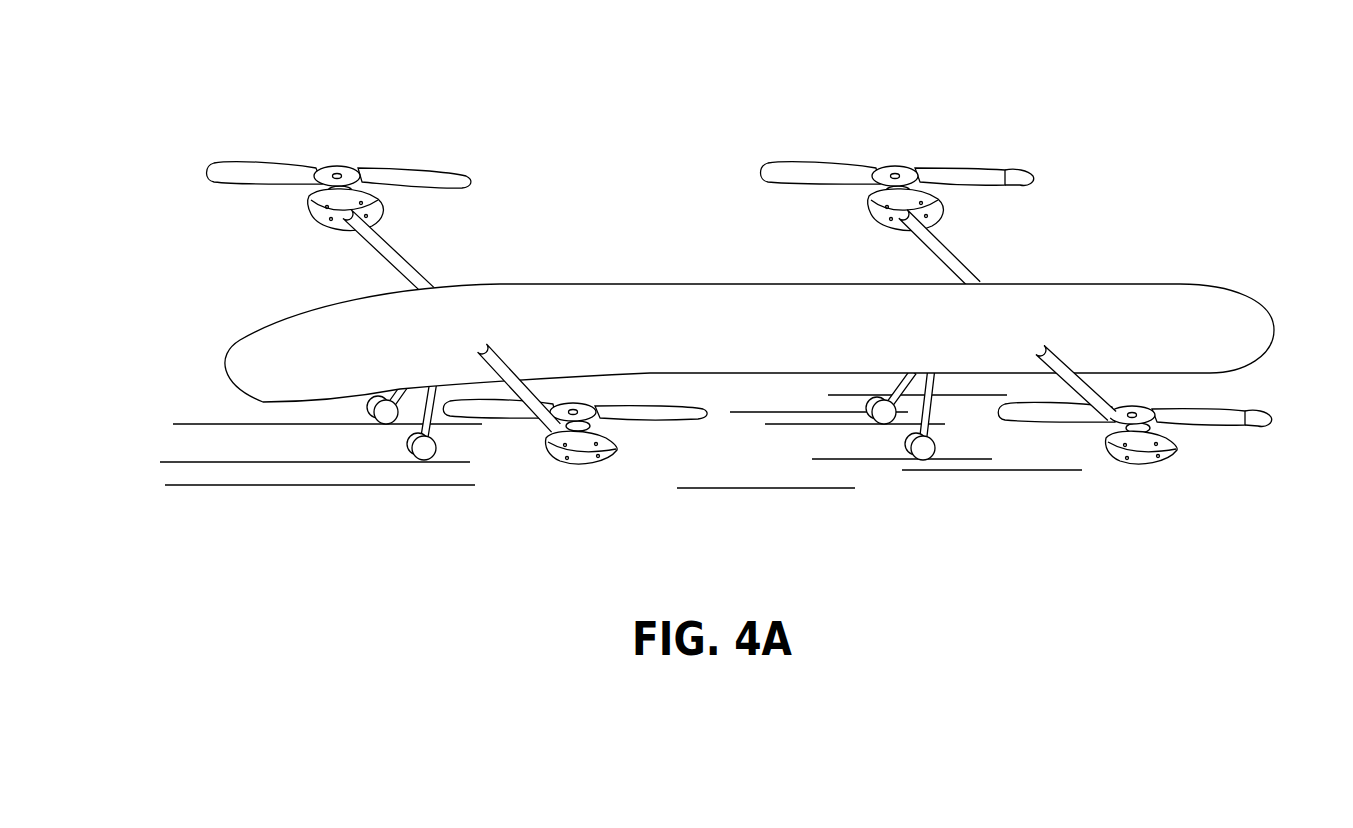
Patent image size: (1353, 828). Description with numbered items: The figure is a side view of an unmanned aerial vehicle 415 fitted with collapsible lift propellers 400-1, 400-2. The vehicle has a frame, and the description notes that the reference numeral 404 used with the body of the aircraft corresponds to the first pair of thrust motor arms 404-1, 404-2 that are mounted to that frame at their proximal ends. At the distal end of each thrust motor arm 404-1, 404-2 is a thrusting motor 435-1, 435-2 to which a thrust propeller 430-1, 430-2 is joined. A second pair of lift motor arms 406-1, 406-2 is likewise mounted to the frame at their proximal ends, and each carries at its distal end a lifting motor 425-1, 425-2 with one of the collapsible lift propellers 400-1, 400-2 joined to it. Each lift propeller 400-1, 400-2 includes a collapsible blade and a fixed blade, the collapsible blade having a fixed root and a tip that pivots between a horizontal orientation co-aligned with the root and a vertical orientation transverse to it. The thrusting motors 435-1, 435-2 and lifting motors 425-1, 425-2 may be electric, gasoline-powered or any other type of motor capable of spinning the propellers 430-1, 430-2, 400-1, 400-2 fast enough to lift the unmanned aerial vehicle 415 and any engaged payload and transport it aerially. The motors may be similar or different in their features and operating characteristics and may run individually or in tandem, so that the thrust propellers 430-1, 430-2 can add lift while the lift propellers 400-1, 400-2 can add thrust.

The lift propeller 400-1 is at (945, 152).
The lift propeller 400-2 is at (1112, 474).
The thrust propeller 430-1 is at (388, 152).
The thrust propeller 430-2 is at (552, 488).
The aircraft body 404 is at (242, 367).
The unmanned aerial vehicle 415 is at (1228, 319).
The thrust motor arm 404-1 is at (397, 265).
The thrust motor arm 404-2 is at (497, 366).
The lift motor arm 406-1 is at (955, 265).
The lift motor arm 406-2 is at (1050, 367).
The lifting motor 425-1 is at (870, 198).
The lifting motor 425-2 is at (1112, 437).
The thrusting motor 435-1 is at (312, 197).
The thrusting motor 435-2 is at (548, 437).